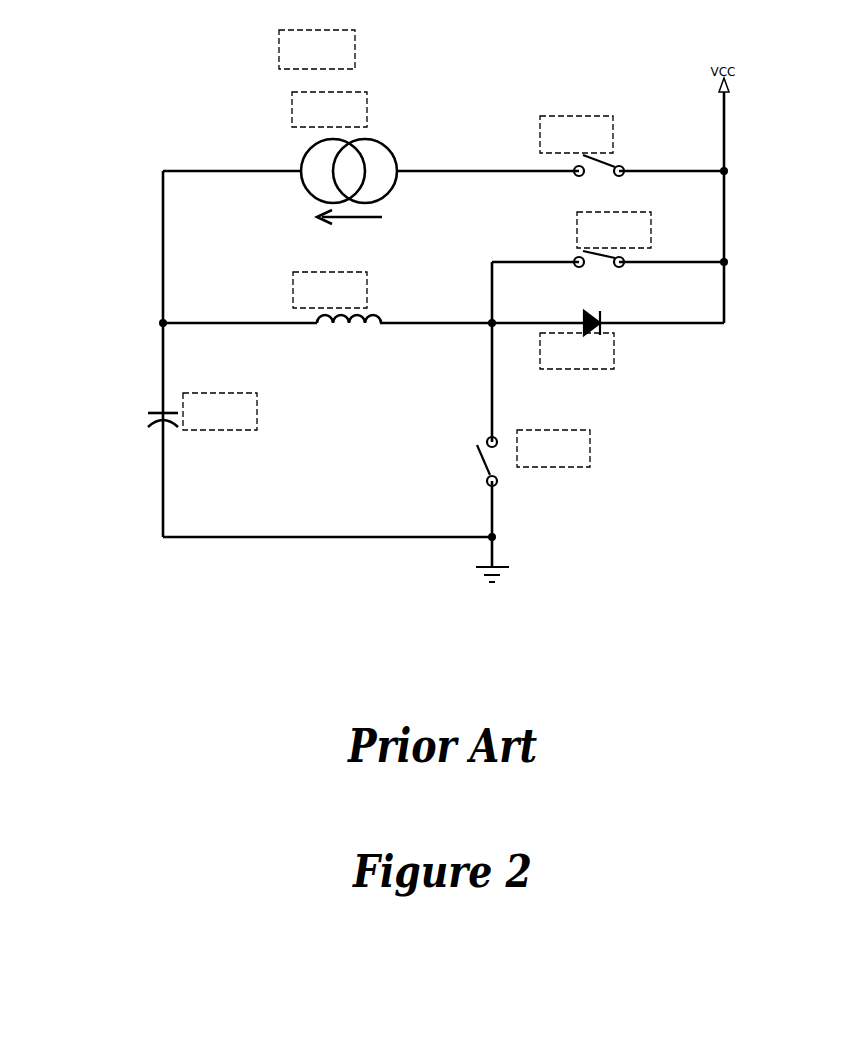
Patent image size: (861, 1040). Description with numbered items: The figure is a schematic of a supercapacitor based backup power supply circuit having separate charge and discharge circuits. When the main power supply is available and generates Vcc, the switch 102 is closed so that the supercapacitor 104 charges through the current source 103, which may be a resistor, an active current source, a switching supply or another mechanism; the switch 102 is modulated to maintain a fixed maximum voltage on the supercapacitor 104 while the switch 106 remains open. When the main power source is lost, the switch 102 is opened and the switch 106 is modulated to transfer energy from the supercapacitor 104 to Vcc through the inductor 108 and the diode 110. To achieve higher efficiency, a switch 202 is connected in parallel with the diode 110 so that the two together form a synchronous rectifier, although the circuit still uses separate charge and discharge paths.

The switch 102 is at (625, 152).
The current source 103 is at (367, 139).
The supercapacitor 104 is at (158, 405).
The switch 106 is at (493, 455).
The inductor 108 is at (316, 322).
The diode 110 is at (625, 345).
The switch 202 is at (633, 250).